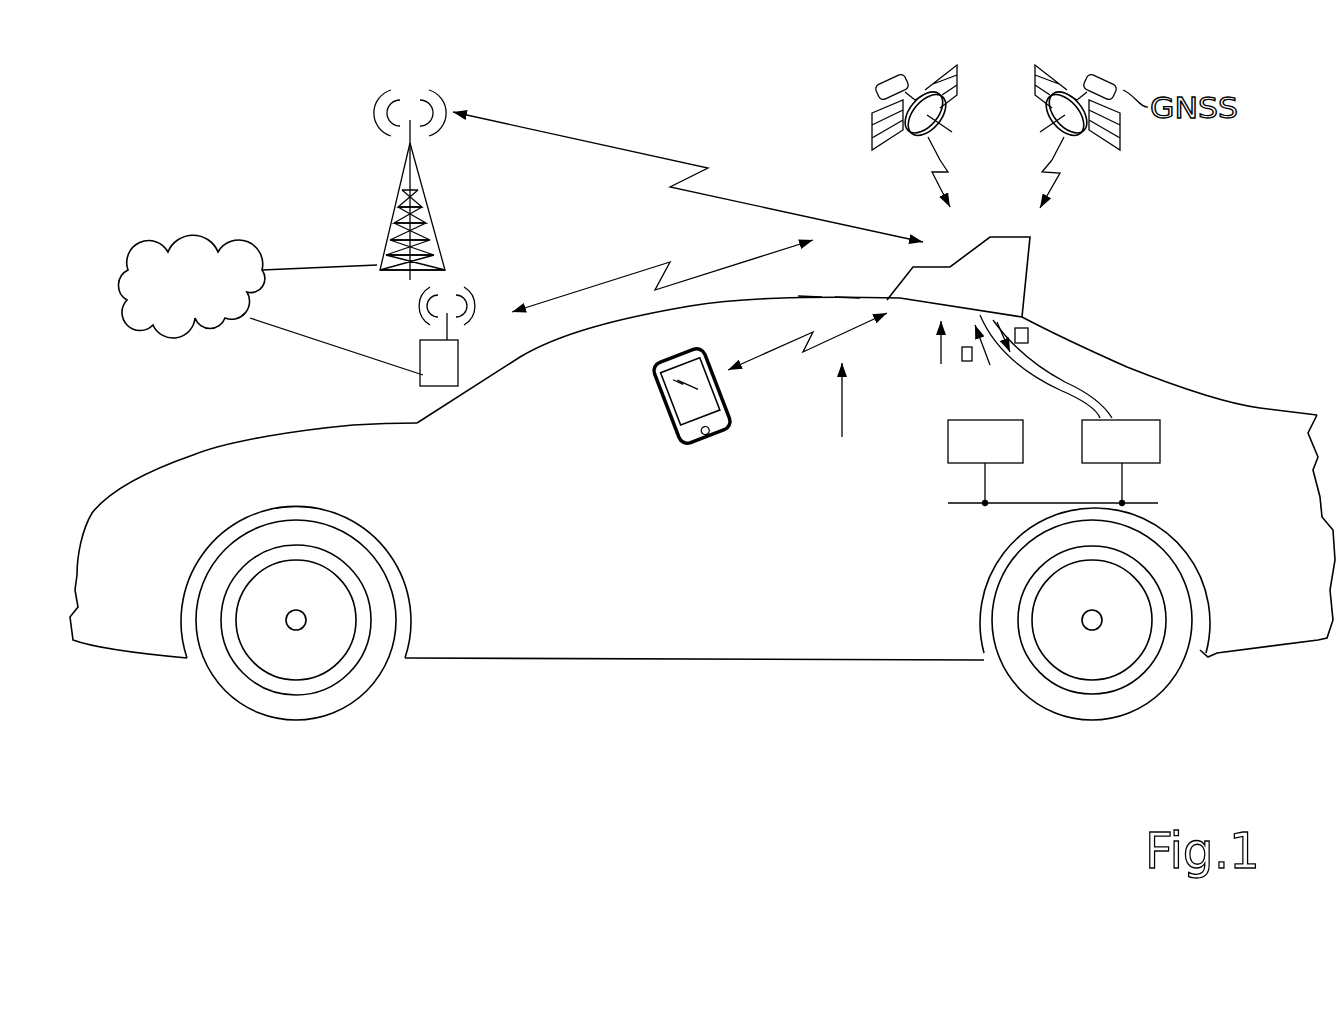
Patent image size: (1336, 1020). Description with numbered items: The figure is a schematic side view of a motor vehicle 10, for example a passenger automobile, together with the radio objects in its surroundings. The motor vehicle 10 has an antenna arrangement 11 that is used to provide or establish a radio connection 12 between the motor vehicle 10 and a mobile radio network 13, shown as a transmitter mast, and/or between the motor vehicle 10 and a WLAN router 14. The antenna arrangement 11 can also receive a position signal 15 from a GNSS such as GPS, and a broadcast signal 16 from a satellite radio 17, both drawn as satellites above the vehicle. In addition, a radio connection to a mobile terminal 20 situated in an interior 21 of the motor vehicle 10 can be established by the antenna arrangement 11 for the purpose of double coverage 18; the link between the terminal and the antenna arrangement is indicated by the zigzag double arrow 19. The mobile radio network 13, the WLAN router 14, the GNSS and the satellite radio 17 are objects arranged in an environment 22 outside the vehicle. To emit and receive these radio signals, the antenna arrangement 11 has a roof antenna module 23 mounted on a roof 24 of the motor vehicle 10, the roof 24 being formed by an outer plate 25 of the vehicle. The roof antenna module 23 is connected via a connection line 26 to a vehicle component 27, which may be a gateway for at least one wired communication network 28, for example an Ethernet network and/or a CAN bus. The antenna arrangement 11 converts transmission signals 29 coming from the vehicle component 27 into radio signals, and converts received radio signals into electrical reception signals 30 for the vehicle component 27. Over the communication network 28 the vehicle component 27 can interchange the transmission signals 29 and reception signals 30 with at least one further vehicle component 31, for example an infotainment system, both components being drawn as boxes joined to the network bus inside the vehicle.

The motor vehicle 10 is at (1273, 408).
The antenna arrangement 11 is at (941, 359).
The radio connection 12 is at (640, 150).
The mobile radio network 13 is at (397, 205).
The WLAN router 14 is at (420, 377).
The position signal 15 is at (1042, 167).
The broadcast signal 16 is at (932, 175).
The satellite radio 17 is at (877, 92).
The double coverage 18 is at (843, 416).
The wireless link 19 is at (787, 352).
The mobile terminal 20 is at (710, 443).
The interior 21 is at (624, 431).
The environment 22 is at (1174, 241).
The roof antenna module 23 is at (1030, 250).
The roof 24 is at (845, 298).
The outer plate 25 is at (810, 297).
The connection line 26 is at (1060, 390).
The vehicle component 27 is at (1126, 420).
The communication network 28 is at (1000, 503).
The transmission signals 29 is at (967, 362).
The reception signals 30 is at (1028, 336).
The further vehicle component 31 is at (948, 450).